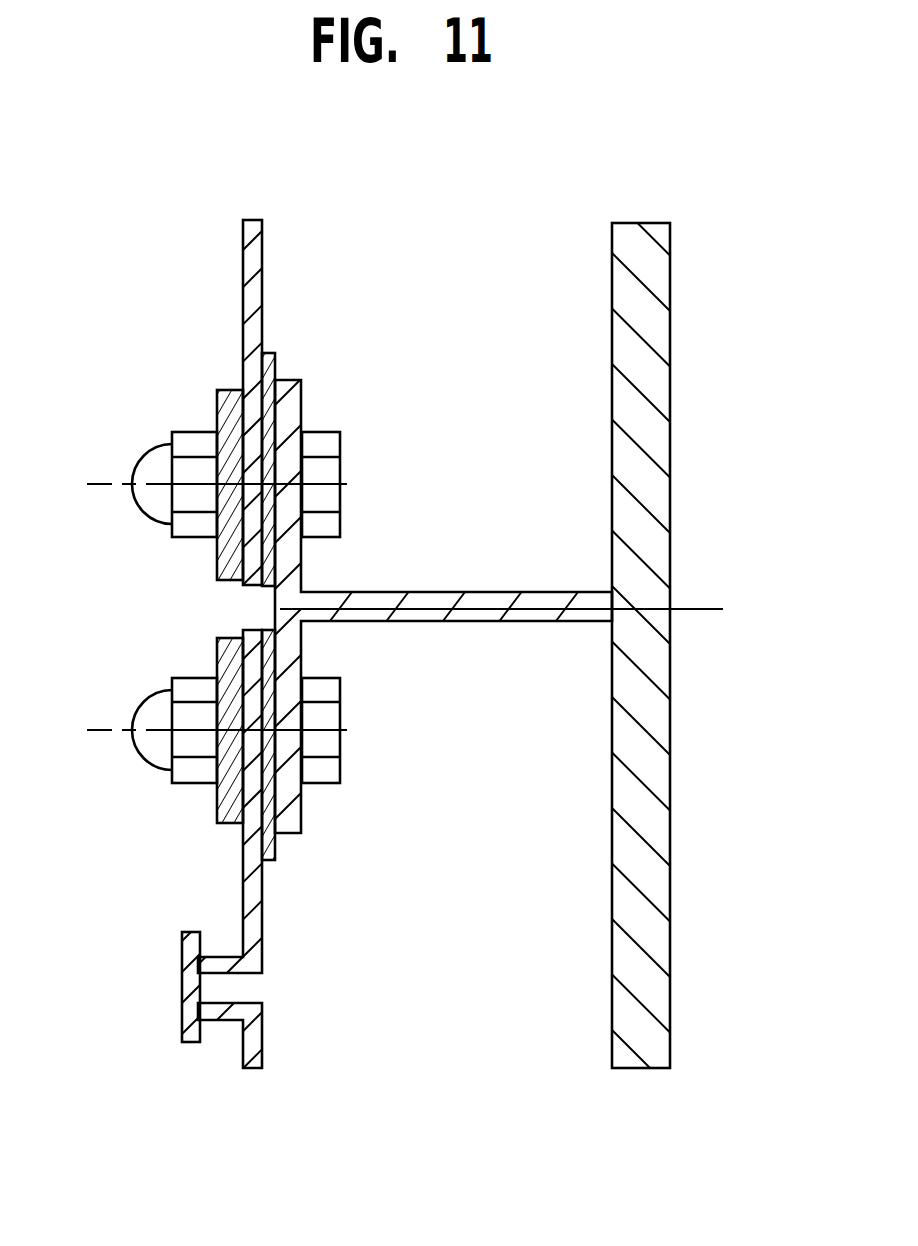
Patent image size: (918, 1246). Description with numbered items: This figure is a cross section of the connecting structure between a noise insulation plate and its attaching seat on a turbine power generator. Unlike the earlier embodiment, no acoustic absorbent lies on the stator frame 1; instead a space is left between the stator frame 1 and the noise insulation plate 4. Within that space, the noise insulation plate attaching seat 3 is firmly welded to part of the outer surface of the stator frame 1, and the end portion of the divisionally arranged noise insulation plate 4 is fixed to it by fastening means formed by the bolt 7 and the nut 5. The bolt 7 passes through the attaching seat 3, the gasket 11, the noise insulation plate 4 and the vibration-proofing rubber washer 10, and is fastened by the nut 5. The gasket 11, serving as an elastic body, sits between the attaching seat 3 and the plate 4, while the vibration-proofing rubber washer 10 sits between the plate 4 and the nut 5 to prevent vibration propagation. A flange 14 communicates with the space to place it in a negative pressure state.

The stator frame 1 is at (647, 831).
The noise insulation plate attaching seat 3 is at (288, 620).
The noise insulation plate 4 is at (253, 325).
The nut 5 is at (187, 717).
The bolt 7 is at (323, 437).
The vibration-proofing rubber washer 10 is at (217, 653).
The gasket 11 is at (248, 838).
The flange 14 is at (185, 1013).